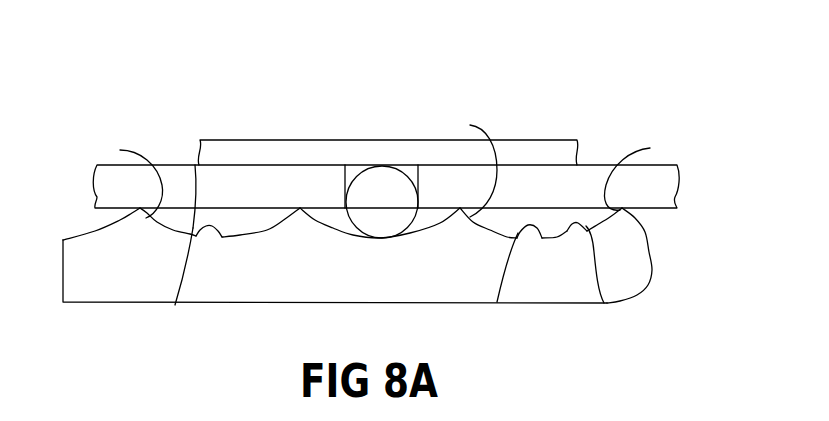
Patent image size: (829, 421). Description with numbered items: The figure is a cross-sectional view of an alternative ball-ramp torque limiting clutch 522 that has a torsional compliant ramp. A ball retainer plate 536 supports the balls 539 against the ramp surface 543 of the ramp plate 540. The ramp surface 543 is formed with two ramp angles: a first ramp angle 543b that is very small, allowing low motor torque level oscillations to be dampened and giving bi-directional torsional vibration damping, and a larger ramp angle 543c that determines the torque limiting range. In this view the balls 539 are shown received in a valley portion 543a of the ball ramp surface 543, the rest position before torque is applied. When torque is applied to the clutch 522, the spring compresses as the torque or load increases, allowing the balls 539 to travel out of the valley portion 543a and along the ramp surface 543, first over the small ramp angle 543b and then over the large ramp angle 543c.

The ball-ramp torque limiting clutch 522 is at (466, 80).
The ball retainer plate 536 is at (645, 190).
The balls 539 is at (382, 202).
The ramp plate 540 is at (76, 312).
The ramp surface 543 is at (246, 212).
The valley portion 543a is at (175, 305).
The first ramp angle 543b is at (195, 165).
The large ramp angle 543c is at (385, 164).